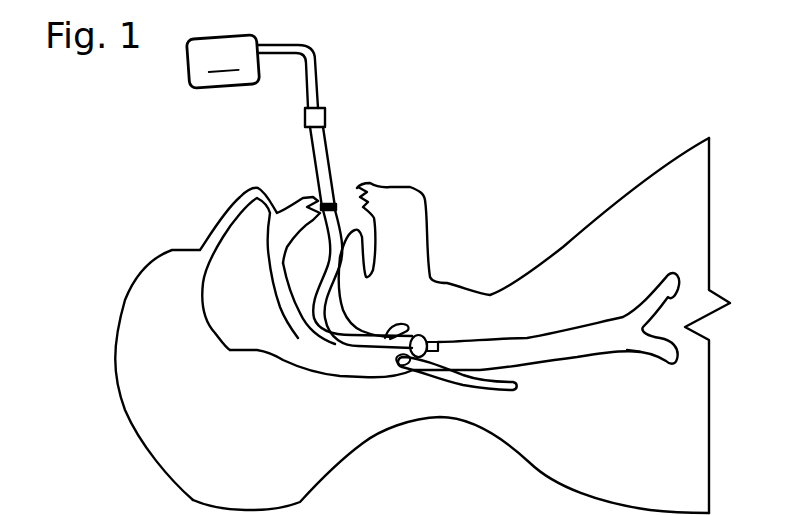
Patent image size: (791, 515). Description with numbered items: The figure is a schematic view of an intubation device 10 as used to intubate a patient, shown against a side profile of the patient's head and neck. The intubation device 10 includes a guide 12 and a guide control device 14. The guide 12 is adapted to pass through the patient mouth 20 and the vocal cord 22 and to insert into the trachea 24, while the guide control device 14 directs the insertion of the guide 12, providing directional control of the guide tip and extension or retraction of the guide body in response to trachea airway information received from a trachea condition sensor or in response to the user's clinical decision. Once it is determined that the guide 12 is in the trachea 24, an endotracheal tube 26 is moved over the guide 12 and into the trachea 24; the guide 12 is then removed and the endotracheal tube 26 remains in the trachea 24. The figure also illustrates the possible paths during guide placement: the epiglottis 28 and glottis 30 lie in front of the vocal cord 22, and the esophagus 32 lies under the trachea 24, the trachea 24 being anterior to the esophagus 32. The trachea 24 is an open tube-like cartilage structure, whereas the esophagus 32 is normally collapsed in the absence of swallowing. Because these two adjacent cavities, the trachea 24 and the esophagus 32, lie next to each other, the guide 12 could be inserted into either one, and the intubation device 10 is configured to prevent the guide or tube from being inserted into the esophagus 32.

The intubation device 10 is at (421, 62).
The guide 12 is at (315, 87).
The guide control device 14 is at (222, 62).
The patient mouth 20 is at (354, 203).
The vocal cord 22 is at (430, 337).
The trachea 24 is at (500, 353).
The endotracheal tube 26 is at (318, 152).
The epiglottis 28 is at (397, 334).
The glottis 30 is at (407, 358).
The esophagus 32 is at (473, 390).